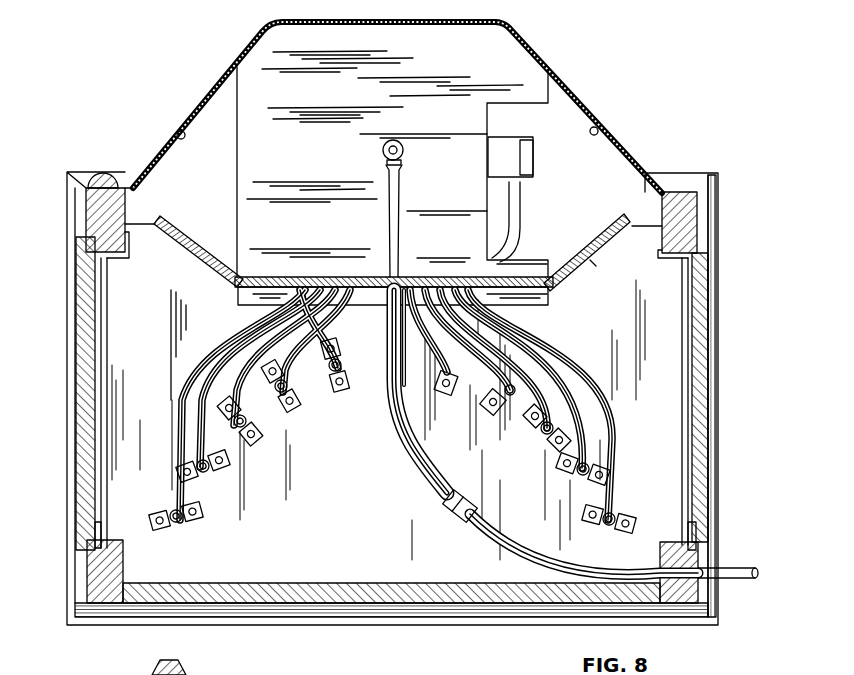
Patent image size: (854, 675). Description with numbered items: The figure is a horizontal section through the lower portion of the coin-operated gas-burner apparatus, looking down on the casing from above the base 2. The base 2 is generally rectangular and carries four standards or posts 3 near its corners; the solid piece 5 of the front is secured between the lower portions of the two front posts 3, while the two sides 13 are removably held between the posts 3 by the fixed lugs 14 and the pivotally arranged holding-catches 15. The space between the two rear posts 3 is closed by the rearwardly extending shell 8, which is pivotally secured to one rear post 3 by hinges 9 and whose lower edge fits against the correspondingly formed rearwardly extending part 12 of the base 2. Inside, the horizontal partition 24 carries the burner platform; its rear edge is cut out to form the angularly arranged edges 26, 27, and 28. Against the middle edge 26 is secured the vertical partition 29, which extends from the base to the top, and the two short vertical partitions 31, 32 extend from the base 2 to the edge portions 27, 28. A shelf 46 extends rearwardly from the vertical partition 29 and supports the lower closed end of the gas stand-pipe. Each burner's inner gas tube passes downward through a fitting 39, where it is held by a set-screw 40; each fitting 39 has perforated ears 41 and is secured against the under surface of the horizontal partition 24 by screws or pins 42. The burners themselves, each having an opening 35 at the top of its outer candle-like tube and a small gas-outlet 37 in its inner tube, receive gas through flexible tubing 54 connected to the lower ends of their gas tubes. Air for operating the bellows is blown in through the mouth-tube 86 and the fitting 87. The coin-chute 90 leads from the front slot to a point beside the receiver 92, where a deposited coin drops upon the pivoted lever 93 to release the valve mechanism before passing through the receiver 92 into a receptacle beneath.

The base 2 is at (70, 198).
The standards or posts 3 is at (90, 216).
The solid piece 5 is at (420, 612).
The shell 8 is at (407, 22).
The hinges 9 is at (660, 192).
The rearwardly-extending part of the base 12 is at (178, 133).
The sides 13 is at (88, 283).
The fixed lugs 14 is at (95, 529).
The holding-catches 15 is at (130, 251).
The horizontal partition 24 is at (378, 420).
The middle edge 26 is at (528, 306).
The angular edge 27 is at (189, 333).
The angular edge 28 is at (594, 262).
The vertical partition 29 is at (281, 281).
The short vertical partition 31 is at (188, 241).
The short vertical partition 32 is at (606, 246).
The opening 35 is at (178, 665).
The gas-outlet 37 is at (195, 674).
The fitting 39 is at (513, 402).
The set-screw 40 is at (292, 387).
The perforated ears 41 is at (442, 394).
The screws or pins 42 is at (443, 396).
The shelf 46 is at (392, 174).
The flexible tubing 54 is at (250, 346).
The mouth-tube 86 is at (405, 196).
The fitting 87 is at (401, 145).
The coin-chute 90 is at (522, 208).
The receiver 92 is at (535, 153).
The lever 93 is at (507, 148).